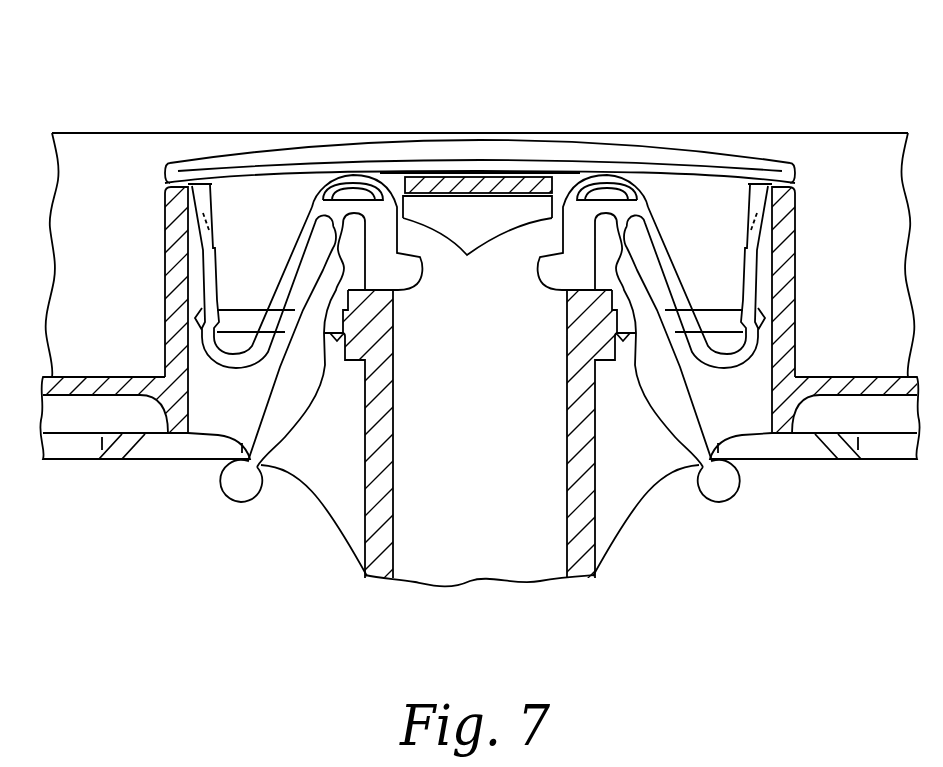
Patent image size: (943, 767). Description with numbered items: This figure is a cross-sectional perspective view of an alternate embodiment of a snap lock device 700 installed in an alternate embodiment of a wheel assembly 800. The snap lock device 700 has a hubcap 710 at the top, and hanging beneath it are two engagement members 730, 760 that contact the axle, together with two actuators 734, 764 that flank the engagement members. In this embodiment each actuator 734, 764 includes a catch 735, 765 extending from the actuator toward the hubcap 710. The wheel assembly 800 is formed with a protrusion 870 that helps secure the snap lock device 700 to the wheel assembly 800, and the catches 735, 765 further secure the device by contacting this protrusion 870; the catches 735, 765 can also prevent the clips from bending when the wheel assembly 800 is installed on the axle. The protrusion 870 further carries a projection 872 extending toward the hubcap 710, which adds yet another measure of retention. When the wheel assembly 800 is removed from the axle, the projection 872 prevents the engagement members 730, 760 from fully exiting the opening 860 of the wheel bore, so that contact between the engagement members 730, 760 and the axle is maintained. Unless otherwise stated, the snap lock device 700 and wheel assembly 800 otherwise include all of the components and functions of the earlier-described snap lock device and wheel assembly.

The snap lock device 700 is at (480, 310).
The hubcap 710 is at (480, 96).
The engagement member 730 is at (382, 264).
The actuator 734 is at (270, 364).
The catch 735 is at (312, 451).
The engagement member 760 is at (569, 249).
The actuator 764 is at (734, 364).
The catch 765 is at (596, 454).
The wheel assembly 800 is at (472, 257).
The opening 860 is at (480, 226).
The protrusion 870 is at (480, 276).
The projection 872 is at (523, 312).